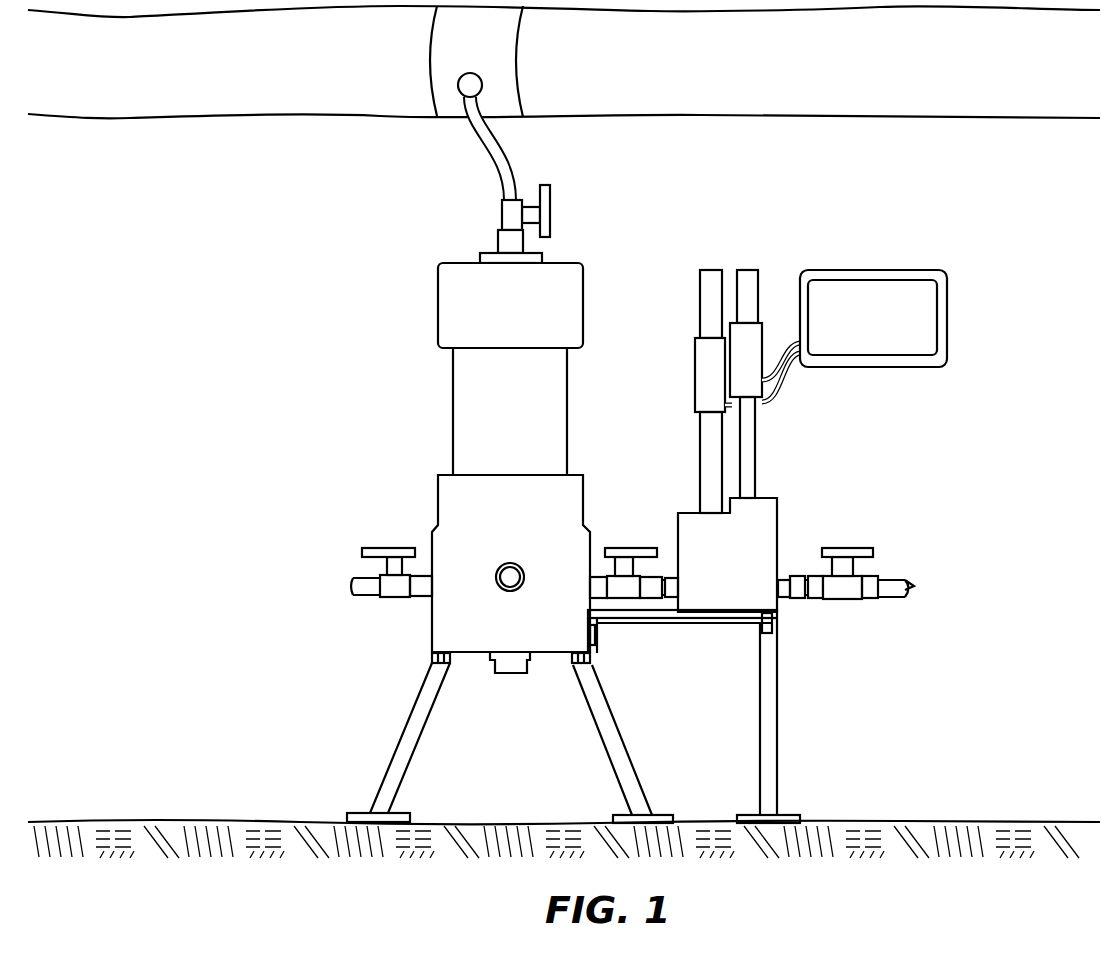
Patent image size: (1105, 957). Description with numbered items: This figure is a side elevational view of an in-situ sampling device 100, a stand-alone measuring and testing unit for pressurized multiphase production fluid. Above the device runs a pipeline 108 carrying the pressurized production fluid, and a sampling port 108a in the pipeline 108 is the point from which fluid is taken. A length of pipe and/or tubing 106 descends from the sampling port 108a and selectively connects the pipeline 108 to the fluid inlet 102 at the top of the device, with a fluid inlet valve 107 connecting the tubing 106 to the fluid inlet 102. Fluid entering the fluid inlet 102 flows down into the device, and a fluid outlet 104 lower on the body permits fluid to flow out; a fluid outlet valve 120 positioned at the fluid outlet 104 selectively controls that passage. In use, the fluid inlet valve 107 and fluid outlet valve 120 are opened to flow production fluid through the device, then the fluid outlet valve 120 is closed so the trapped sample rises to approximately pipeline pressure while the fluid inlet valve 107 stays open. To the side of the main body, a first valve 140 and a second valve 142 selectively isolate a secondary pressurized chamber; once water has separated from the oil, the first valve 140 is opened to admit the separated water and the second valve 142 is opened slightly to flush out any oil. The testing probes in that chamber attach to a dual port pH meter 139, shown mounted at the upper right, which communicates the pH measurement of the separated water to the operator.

The in-situ sampling device 100 is at (348, 463).
The fluid inlet 102 is at (505, 248).
The fluid outlet 104 is at (427, 593).
The pipe and/or tubing 106 is at (477, 155).
The fluid inlet valve 107 is at (532, 202).
The pipeline 108 is at (752, 105).
The sampling port 108a is at (458, 90).
The fluid outlet valve 120 is at (388, 598).
The dual port pH meter 139 is at (910, 290).
The first valve 140 is at (633, 547).
The second valve 142 is at (855, 548).